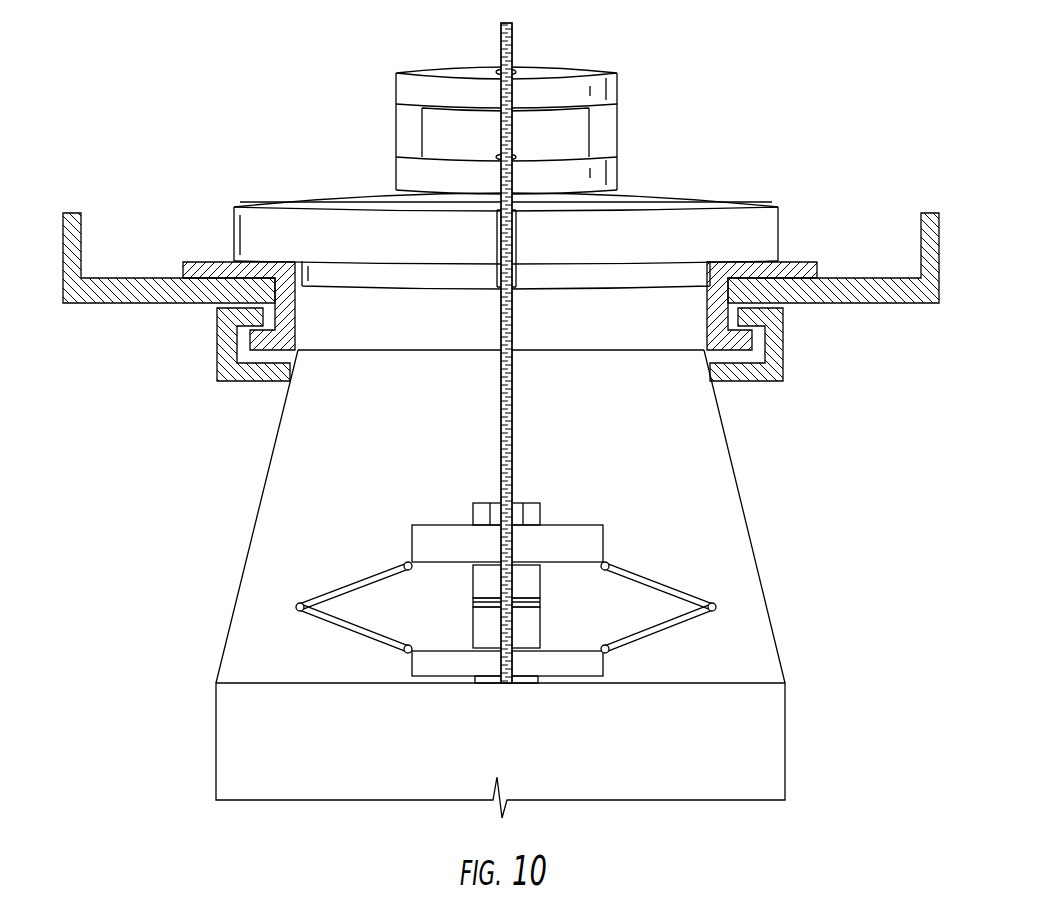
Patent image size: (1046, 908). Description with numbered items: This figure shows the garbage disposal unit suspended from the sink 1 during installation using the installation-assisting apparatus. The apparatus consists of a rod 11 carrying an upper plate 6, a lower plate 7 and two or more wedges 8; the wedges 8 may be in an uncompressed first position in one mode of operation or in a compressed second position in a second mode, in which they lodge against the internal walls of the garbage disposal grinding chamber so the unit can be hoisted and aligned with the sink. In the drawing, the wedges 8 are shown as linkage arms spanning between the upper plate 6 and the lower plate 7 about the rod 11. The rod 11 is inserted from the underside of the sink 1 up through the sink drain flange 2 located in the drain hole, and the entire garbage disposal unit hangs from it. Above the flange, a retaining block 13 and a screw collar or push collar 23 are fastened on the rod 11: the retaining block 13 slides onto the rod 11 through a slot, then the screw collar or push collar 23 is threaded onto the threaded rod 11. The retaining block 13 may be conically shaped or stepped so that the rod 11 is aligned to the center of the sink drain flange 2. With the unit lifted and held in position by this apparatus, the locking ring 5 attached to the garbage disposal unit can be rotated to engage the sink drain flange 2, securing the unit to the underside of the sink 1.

The sink 1 is at (150, 313).
The sink drain flange 2 is at (804, 261).
The locking ring 5 is at (792, 378).
The upper plate 6 is at (410, 540).
The lower plate 7 is at (400, 663).
The wedges 8 is at (314, 586).
The rod 11 is at (518, 43).
The retaining block 13 is at (232, 212).
The screw collar or push collar 23 is at (392, 142).